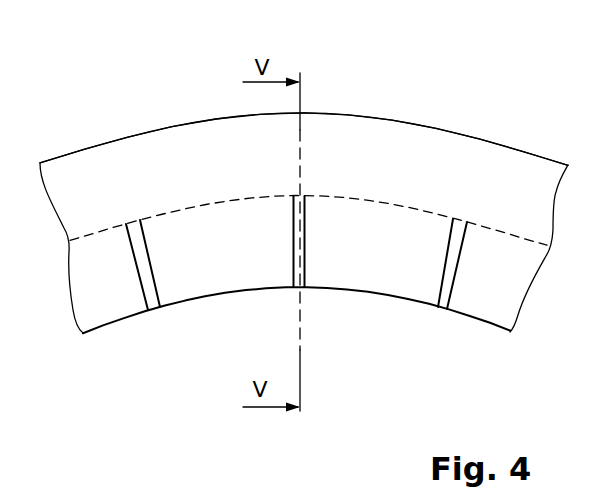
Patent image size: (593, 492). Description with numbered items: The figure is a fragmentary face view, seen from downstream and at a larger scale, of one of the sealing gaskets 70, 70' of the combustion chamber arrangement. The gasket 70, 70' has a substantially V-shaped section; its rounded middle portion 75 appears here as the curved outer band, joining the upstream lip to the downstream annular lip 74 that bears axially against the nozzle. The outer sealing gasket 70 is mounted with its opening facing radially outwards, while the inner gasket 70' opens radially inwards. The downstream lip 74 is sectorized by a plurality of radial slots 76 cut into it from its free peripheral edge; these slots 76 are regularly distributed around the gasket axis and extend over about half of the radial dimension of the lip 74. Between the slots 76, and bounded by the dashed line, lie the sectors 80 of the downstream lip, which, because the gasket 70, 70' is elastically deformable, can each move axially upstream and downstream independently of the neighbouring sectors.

The outer sealing gasket 70 is at (304, 170).
The inner gasket 70' is at (304, 170).
The downstream annular lip 74 is at (382, 133).
The rounded middle portion 75 is at (152, 132).
The radial slots 76 is at (157, 288).
The sectors 80 is at (118, 304).